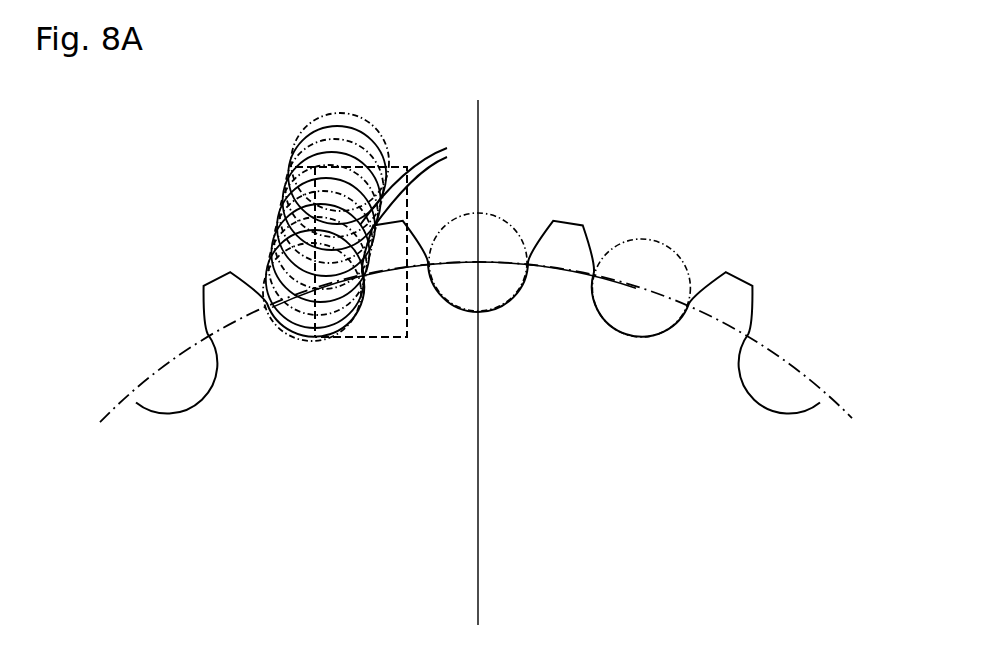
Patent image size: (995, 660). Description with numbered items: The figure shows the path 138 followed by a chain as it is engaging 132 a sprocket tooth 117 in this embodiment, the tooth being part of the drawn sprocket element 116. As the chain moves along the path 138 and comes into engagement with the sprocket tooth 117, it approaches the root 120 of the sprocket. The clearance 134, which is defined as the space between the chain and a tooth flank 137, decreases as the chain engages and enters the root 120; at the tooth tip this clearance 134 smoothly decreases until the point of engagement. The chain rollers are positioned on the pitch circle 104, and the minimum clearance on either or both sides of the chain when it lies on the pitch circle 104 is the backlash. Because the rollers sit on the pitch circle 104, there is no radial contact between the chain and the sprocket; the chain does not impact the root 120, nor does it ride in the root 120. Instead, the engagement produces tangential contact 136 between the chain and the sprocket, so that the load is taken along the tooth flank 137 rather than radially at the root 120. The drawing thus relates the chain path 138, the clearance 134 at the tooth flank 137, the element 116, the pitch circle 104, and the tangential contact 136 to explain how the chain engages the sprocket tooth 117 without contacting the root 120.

The pitch circle 104 is at (790, 367).
The path 138 is at (277, 185).
The root 120 is at (330, 337).
The tooth flank 137 is at (363, 248).
The sprocket tooth 117 is at (397, 242).
The clearance 134 is at (447, 152).
The arm inner surface 116 is at (393, 216).
The tangential contact 136 is at (272, 315).
The engaging 132 is at (308, 97).